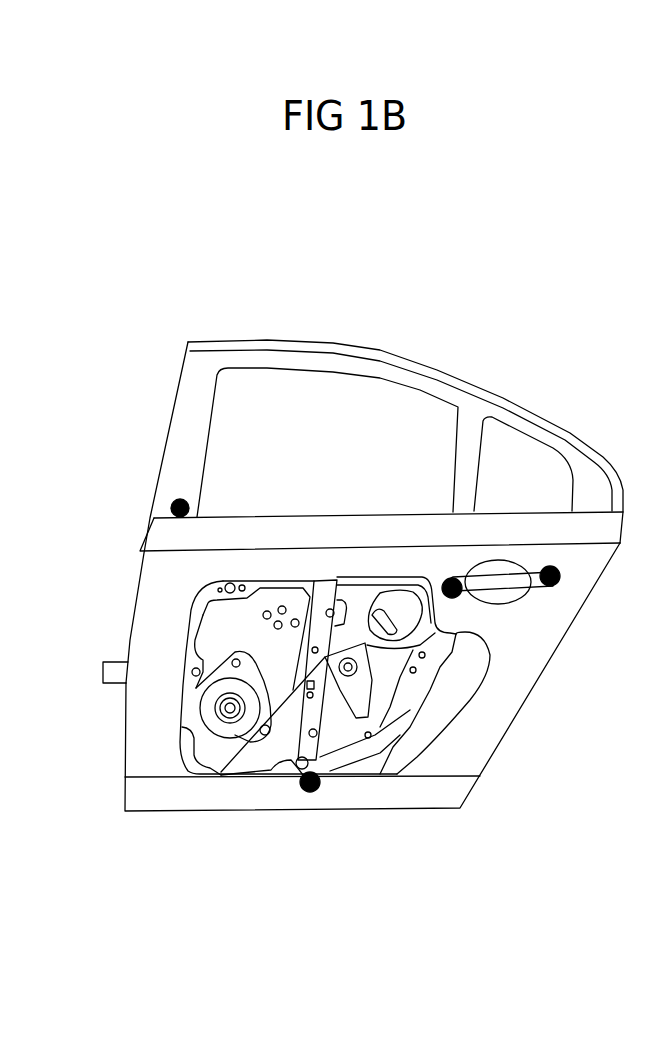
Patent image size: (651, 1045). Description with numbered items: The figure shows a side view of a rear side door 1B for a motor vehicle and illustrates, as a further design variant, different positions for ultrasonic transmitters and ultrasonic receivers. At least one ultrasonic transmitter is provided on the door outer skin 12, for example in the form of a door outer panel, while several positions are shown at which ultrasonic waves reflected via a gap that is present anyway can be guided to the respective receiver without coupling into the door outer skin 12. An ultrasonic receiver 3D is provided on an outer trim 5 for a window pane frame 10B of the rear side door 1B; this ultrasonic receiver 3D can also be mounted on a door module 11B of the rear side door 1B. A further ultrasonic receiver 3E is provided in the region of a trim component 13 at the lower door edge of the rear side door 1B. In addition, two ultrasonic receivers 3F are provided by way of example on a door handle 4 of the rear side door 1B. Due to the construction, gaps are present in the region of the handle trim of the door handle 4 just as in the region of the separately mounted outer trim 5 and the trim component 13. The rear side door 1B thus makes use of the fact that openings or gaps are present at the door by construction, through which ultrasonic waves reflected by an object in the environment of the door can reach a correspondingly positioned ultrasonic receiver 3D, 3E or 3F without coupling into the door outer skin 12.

The rear side door 1B is at (450, 337).
The window pane frame 10B is at (303, 340).
The outer trim 5 is at (185, 388).
The ultrasonic receiver 3D is at (172, 504).
The door outer skin 12 is at (158, 633).
The door handle 4 is at (520, 560).
The ultrasonic receivers 3F is at (558, 584).
The door module 11B is at (447, 695).
The ultrasonic receiver 3E is at (310, 792).
The trim component 13 is at (425, 798).